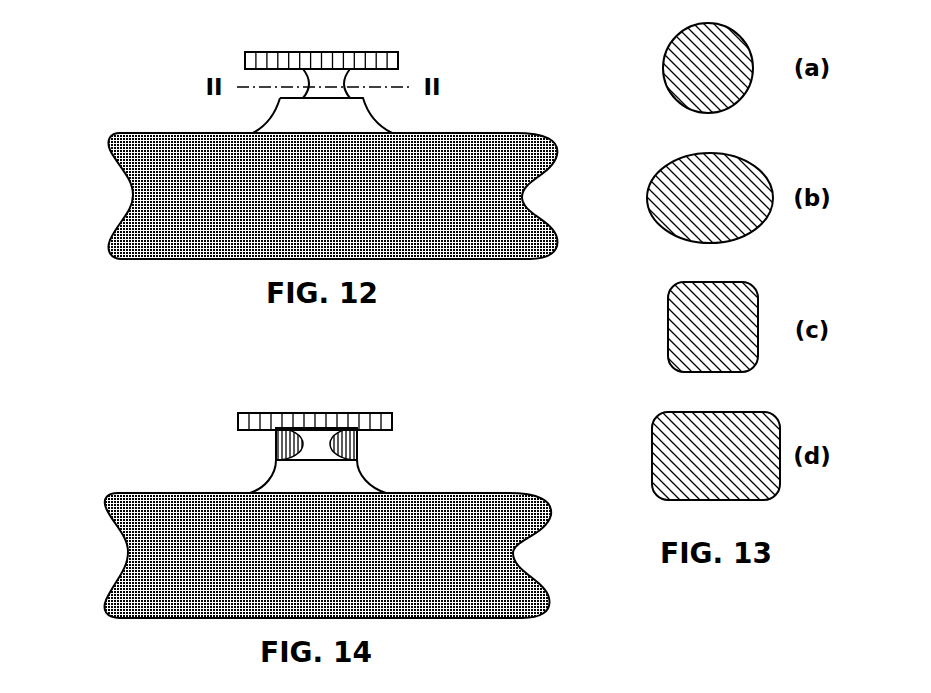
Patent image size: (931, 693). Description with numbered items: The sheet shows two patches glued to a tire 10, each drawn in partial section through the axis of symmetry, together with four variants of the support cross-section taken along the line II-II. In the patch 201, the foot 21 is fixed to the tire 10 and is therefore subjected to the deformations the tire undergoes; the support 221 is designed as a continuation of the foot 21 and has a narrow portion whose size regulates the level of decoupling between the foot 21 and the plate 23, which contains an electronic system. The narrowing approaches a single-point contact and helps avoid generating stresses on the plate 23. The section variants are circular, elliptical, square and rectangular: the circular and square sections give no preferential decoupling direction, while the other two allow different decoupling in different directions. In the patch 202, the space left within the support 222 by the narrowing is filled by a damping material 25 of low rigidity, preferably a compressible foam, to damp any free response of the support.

In FIG. 12, the tire 10 is at (160, 188).
In FIG. 14, the tire 10 is at (153, 548).
In FIG. 12, the patch 201 is at (240, 67).
In FIG. 14, the patch 202 is at (237, 427).
In FIG. 12, the foot 21 is at (357, 117).
In FIG. 14, the foot 21 is at (350, 478).
In FIG. 12, the support 221 is at (323, 78).
In FIG. 14, the support 222 is at (347, 413).
In FIG. 12, the plate 23 is at (380, 61).
In FIG. 14, the plate 23 is at (373, 423).
In FIG. 14, the damping material 25 is at (345, 444).